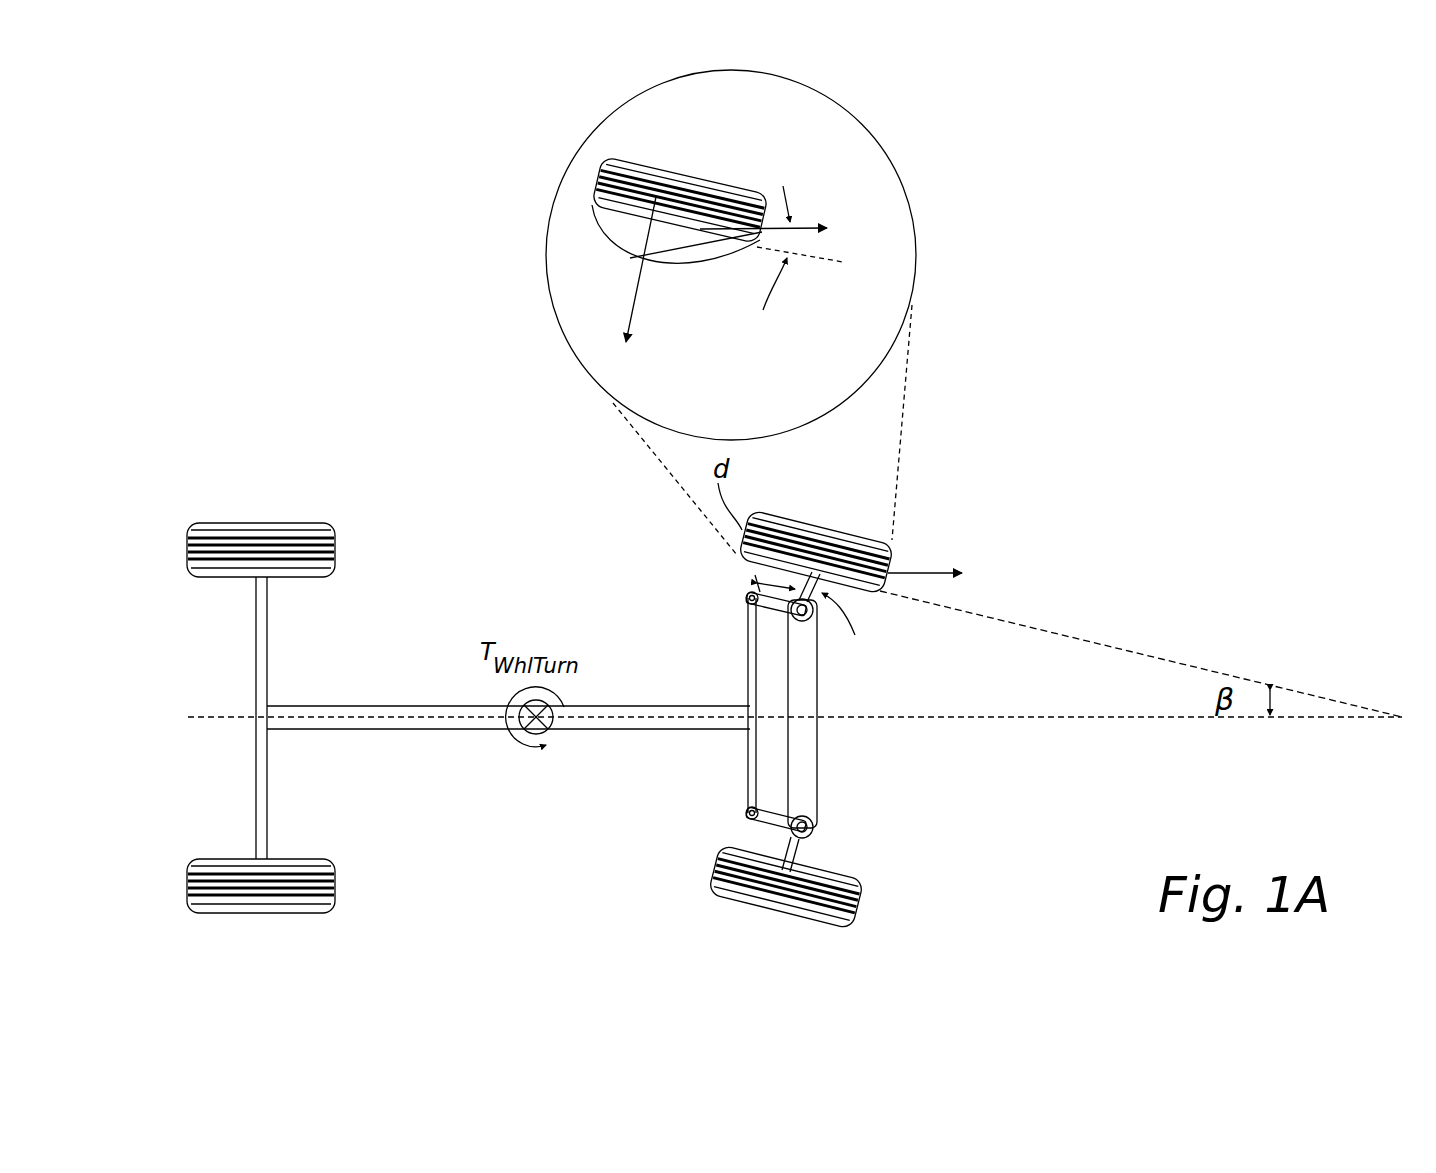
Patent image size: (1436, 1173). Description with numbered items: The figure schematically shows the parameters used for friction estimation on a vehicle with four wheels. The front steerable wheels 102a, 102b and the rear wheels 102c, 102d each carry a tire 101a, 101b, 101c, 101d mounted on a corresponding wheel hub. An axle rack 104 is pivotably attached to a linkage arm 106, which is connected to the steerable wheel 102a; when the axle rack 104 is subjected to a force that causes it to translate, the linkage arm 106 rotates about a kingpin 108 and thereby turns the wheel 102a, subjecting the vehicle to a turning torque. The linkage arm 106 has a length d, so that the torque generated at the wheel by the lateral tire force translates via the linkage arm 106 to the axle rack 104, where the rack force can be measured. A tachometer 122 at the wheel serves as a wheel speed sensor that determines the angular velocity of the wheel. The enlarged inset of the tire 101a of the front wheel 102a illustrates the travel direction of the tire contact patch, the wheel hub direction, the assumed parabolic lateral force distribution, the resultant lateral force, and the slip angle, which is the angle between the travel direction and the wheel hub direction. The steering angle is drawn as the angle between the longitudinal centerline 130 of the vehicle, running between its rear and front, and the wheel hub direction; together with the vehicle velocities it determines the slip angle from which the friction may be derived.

The tire 101a is at (771, 361).
The tire 101b is at (857, 872).
The tire 101c is at (273, 893).
The tire 101d is at (266, 520).
The steerable wheel 102a is at (700, 180).
The steerable wheel 102b is at (840, 873).
The rear wheel 102c is at (308, 862).
The rear wheel 102d is at (290, 525).
The axle rack 104 is at (748, 768).
The linkage arm 106 is at (766, 606).
The kingpin 108 is at (740, 590).
The tachometer 122 is at (857, 625).
The longitudinal centerline 130 is at (1118, 720).